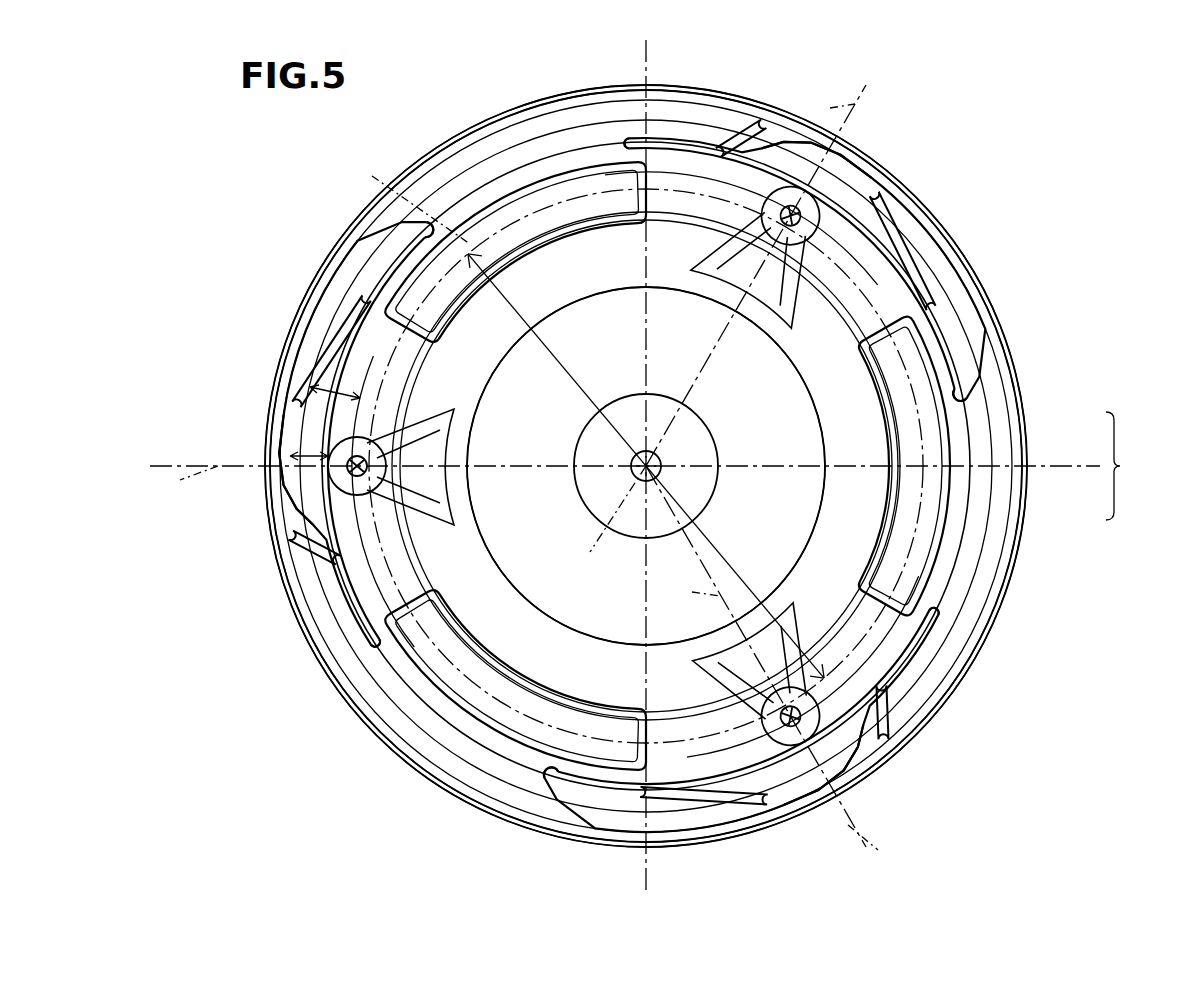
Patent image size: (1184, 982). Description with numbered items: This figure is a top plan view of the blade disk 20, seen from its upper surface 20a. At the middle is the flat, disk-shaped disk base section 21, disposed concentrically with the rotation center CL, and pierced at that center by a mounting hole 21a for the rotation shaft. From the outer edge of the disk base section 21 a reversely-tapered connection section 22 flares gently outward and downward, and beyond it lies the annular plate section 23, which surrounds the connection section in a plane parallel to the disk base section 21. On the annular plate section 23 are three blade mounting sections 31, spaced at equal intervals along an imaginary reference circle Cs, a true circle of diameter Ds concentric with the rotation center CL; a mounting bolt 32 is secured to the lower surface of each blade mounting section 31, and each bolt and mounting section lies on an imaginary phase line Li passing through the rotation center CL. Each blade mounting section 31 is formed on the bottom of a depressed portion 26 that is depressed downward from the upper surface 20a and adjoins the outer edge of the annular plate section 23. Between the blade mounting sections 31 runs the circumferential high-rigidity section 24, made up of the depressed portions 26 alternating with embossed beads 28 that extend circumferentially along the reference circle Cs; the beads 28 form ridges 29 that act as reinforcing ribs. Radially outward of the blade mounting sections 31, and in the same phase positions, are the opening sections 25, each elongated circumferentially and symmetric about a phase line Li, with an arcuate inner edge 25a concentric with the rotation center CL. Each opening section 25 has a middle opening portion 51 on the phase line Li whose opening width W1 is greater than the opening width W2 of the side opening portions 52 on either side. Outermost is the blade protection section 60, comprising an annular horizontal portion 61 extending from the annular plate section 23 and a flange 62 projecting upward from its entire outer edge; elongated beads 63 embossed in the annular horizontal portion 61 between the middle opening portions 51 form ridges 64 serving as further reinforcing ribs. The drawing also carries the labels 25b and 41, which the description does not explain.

The blade disk 20 is at (214, 185).
The upper surface of the blade disk 20a is at (613, 313).
The disk base section 21 is at (690, 430).
The mounting hole 21a is at (662, 462).
The reversely-tapered connection section 22 is at (812, 418).
The annular plate section 23 is at (985, 590).
The circumferential high-rigidity section 24 is at (950, 385).
The opening section 25 is at (300, 485).
The inner edge of the opening section 25a is at (325, 335).
The second spring end 25b is at (325, 368).
The depressed portion 26 is at (365, 572).
The bead 28 is at (684, 470).
The ridge 29 is at (455, 690).
The blade mounting section 31 is at (372, 462).
The mounting bolt 32 is at (384, 478).
The pad 41 is at (456, 418).
The middle opening portion 51 is at (292, 510).
The side opening portion 52 is at (362, 300).
The blade protection section 60 is at (1132, 466).
The annular horizontal portion 61 is at (990, 430).
The flange 62 is at (1030, 490).
The elongated bead 63 is at (654, 495).
The ridge 64 is at (360, 253).
The rotation center CL is at (625, 465).
The phase line Li is at (532, 476).
The reference circle Cs is at (629, 444).
The diameter of the reference circle Ds is at (646, 466).
The opening width of the middle opening portion W1 is at (290, 456).
The opening width of the side opening portion W2 is at (312, 389).